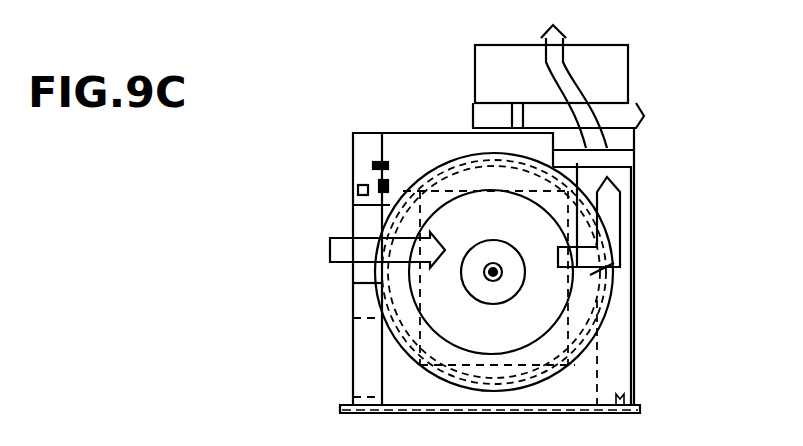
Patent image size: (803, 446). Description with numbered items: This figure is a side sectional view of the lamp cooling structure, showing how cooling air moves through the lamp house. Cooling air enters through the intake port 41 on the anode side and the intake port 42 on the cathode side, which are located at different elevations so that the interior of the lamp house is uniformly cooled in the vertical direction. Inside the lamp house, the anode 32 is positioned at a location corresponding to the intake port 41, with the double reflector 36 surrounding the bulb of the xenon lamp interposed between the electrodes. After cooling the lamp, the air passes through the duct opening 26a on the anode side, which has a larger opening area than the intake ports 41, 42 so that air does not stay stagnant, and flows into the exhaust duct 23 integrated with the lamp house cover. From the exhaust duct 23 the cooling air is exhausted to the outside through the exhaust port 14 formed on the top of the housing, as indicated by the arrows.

The exhaust port 14 is at (626, 88).
The exhaust duct 23 is at (637, 205).
The duct opening on the anode side 26a is at (632, 292).
The anode 32 is at (493, 262).
The double reflector 36 is at (455, 135).
The intake port 41 is at (365, 228).
The intake port 42 is at (360, 342).